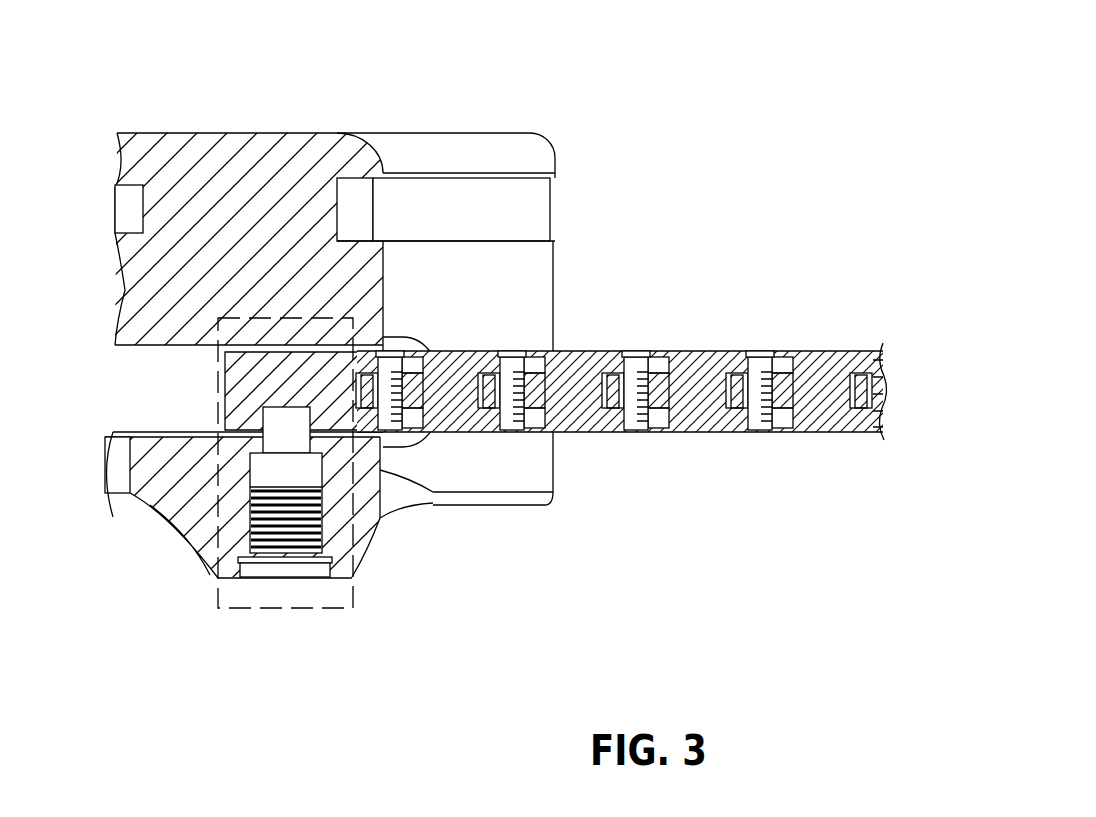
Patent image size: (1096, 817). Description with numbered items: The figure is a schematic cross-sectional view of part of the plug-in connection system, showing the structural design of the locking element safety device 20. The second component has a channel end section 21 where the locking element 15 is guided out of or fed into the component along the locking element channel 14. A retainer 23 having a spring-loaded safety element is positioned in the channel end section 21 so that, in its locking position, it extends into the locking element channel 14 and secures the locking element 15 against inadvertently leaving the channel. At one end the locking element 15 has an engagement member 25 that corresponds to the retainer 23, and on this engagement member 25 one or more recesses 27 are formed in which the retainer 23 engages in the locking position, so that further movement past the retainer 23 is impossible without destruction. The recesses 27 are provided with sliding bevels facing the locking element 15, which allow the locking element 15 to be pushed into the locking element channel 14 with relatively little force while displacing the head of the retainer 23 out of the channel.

The locking element channel 14 is at (128, 405).
The locking element 15 is at (722, 472).
The locking element safety device 20 is at (354, 598).
The channel end section 21 is at (297, 312).
The retainer 23 is at (275, 555).
The engagement member 25 is at (325, 350).
The recesses 27 is at (325, 430).